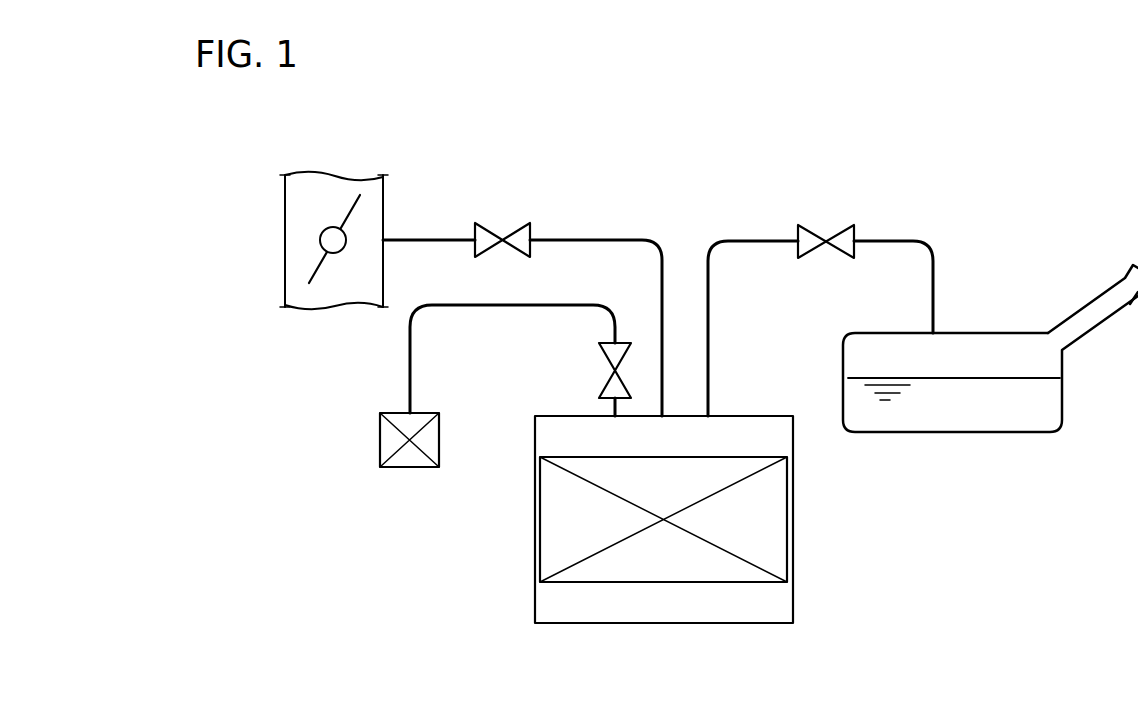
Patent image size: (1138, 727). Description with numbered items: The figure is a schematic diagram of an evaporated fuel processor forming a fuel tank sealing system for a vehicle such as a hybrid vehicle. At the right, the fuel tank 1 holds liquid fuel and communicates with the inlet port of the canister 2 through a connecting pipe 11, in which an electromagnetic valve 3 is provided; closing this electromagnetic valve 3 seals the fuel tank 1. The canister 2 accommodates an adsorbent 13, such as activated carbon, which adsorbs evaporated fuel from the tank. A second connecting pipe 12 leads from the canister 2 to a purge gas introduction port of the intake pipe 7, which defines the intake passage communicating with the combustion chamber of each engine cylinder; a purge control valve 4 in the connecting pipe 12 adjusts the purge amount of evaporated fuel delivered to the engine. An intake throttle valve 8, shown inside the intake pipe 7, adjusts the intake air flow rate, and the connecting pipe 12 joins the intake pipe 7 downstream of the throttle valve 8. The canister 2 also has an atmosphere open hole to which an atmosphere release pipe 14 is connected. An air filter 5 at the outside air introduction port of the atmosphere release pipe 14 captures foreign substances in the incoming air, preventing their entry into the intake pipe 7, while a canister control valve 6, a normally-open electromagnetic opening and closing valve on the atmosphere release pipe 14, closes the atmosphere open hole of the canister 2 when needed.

The fuel tank 1 is at (1063, 400).
The canister 2 is at (795, 595).
The electromagnetic valve 3 is at (843, 226).
The purge control valve 4 is at (515, 228).
The air filter 5 is at (397, 470).
The canister control valve 6 is at (597, 363).
The intake pipe 7 is at (385, 205).
The intake throttle valve 8 is at (310, 286).
The connecting pipe 11 is at (905, 240).
The connecting pipe 12 is at (585, 238).
The adsorbent 13 is at (780, 518).
The atmosphere release pipe 14 is at (545, 303).